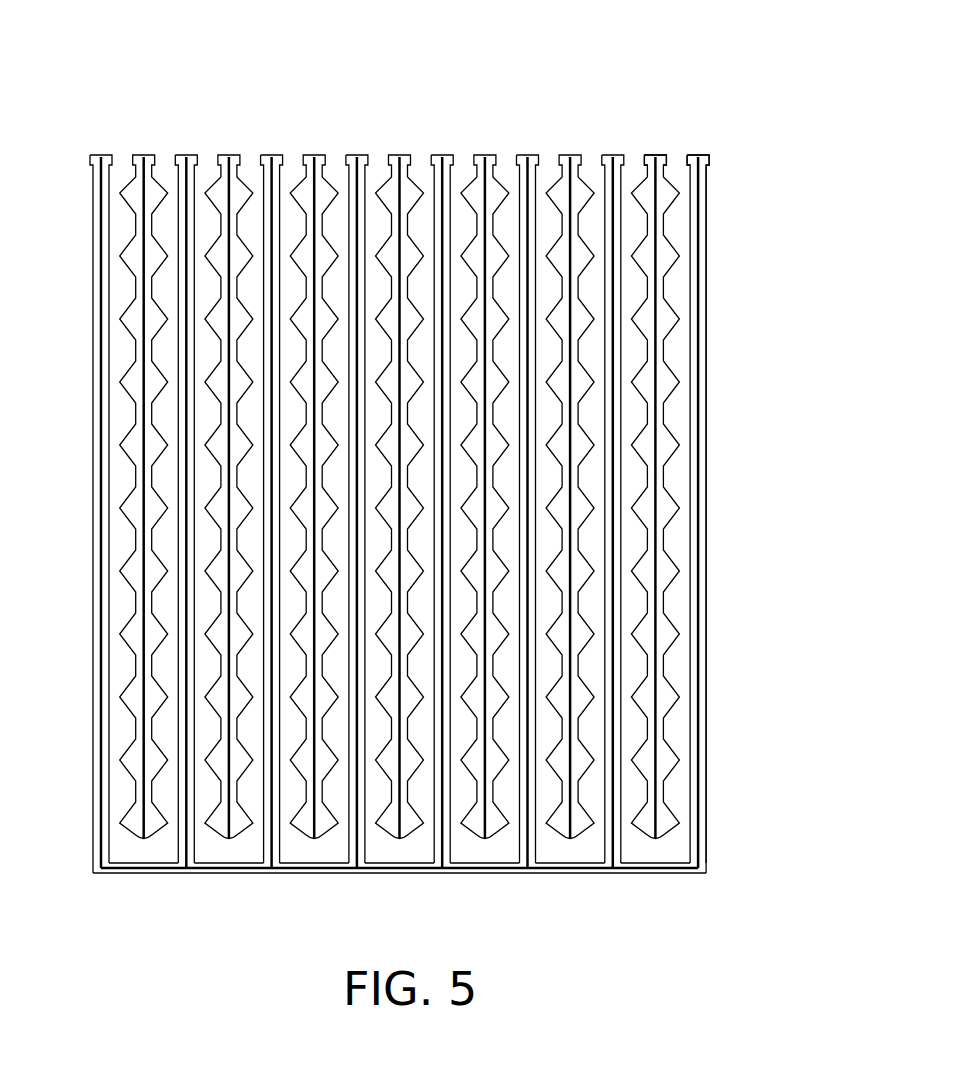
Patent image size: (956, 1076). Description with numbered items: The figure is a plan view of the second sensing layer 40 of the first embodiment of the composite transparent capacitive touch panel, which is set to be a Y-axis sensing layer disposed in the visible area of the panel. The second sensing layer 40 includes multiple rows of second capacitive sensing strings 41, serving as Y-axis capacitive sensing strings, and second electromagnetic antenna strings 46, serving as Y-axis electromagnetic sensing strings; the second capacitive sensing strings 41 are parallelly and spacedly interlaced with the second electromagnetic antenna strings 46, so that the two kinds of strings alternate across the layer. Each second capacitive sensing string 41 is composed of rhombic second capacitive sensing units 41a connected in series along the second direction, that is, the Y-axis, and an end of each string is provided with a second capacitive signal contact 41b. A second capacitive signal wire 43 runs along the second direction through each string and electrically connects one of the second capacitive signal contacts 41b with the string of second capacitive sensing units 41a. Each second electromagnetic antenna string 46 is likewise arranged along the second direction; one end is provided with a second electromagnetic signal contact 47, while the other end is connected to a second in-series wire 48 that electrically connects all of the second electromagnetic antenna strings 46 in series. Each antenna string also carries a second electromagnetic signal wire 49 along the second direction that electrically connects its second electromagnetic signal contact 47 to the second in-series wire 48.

The second sensing layer 40 is at (249, 132).
The second capacitive sensing string 41 is at (461, 444).
The second capacitive sensing unit 41a is at (663, 252).
The second capacitive signal contact 41b is at (661, 155).
The second capacitive signal wire 43 is at (657, 293).
The second electromagnetic antenna string 46 is at (533, 153).
The second electromagnetic signal contact 47 is at (707, 155).
The second in-series wire 48 is at (588, 870).
The second electromagnetic signal wire 49 is at (700, 505).